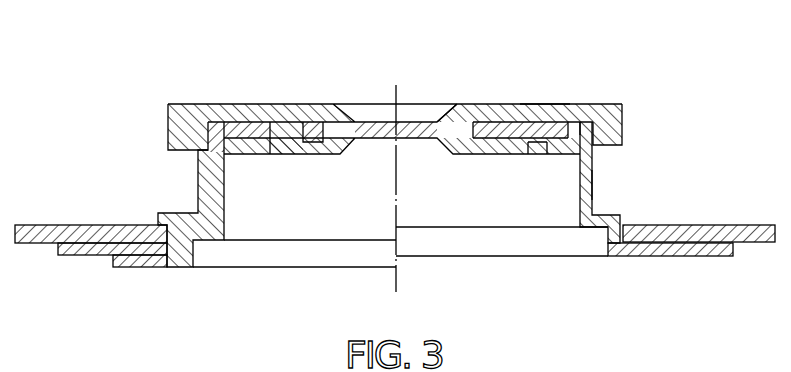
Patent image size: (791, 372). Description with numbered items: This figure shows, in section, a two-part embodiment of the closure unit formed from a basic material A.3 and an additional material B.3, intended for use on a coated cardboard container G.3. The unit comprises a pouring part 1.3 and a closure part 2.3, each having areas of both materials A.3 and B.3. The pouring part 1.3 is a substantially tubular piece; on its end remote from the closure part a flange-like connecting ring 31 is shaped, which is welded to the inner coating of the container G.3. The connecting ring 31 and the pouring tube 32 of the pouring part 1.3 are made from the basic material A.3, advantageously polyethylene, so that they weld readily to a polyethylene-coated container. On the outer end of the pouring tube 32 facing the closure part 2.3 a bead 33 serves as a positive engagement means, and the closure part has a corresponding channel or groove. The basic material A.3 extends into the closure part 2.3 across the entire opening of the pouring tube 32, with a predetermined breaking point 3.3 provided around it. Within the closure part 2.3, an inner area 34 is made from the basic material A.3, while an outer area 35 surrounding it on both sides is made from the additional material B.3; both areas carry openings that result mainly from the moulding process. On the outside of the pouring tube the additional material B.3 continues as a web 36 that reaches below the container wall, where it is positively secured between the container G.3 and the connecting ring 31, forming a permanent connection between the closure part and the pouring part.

The connecting ring 31 is at (707, 257).
The pouring tube 32 is at (580, 186).
The bead 33 is at (605, 104).
The inner area 34 is at (500, 107).
The outer area 35 is at (304, 104).
The web 36 is at (200, 182).
The pouring part 1.3 is at (603, 186).
The closure part 2.3 is at (545, 92).
The predetermined breaking point 3.3 is at (583, 108).
The basic material A.3 is at (642, 257).
The additional material B.3 is at (467, 107).
The container G.3 is at (45, 232).